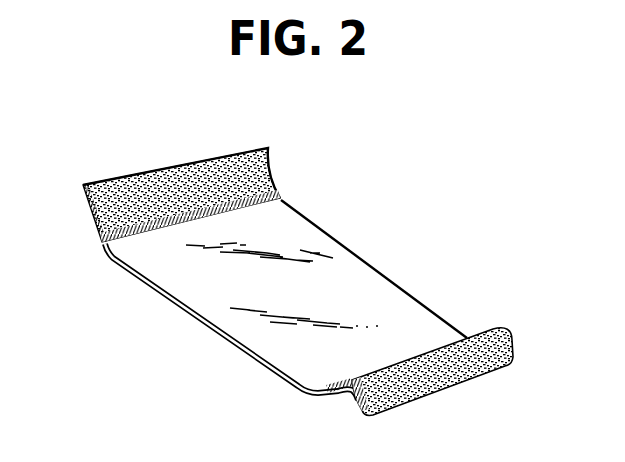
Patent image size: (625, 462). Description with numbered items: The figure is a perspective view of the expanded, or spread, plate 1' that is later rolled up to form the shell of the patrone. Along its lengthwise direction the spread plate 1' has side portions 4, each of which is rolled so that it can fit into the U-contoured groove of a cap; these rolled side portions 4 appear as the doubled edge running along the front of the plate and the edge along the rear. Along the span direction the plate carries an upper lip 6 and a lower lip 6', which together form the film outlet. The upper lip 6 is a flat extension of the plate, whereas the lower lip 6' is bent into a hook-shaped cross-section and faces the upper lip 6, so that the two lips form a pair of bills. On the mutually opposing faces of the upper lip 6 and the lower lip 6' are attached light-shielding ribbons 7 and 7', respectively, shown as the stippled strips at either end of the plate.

The spread plate 1' is at (292, 268).
The side portions 4 is at (313, 231).
The upper lip 6 is at (190, 173).
The lower lip 6' is at (345, 412).
The light-shielding ribbon 7 is at (181, 186).
The light-shielding ribbon 7' is at (432, 387).